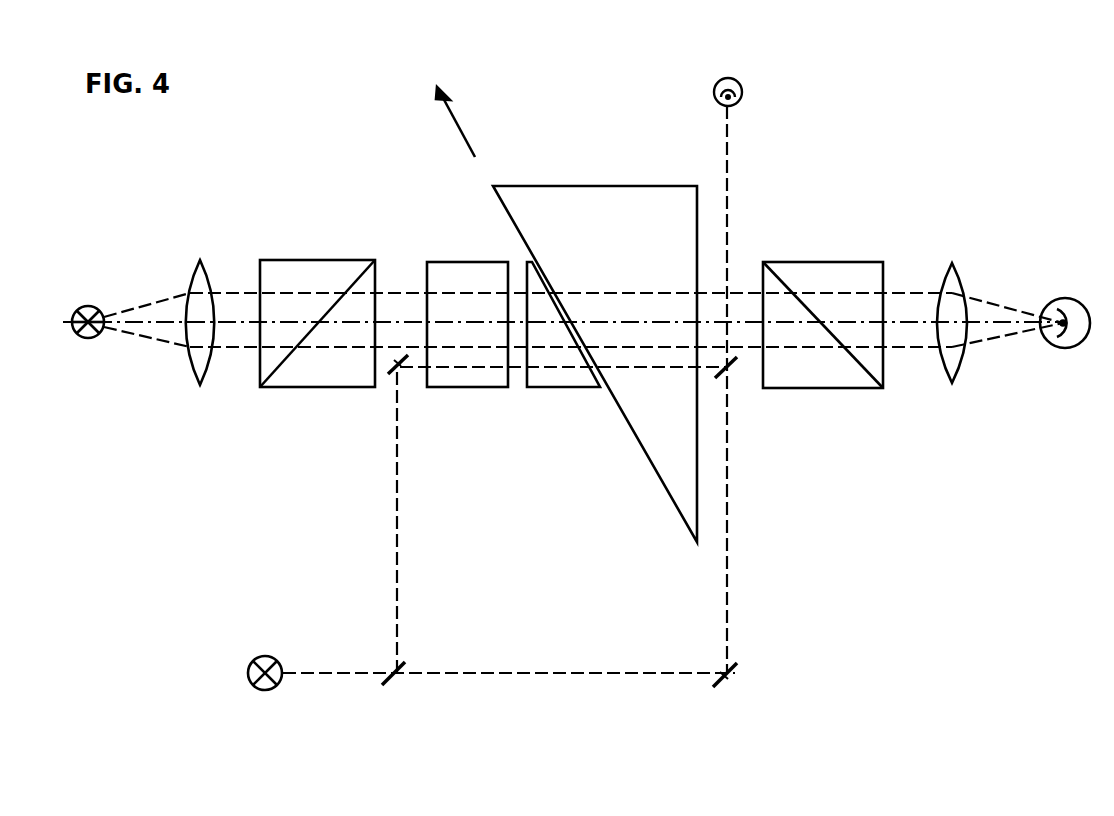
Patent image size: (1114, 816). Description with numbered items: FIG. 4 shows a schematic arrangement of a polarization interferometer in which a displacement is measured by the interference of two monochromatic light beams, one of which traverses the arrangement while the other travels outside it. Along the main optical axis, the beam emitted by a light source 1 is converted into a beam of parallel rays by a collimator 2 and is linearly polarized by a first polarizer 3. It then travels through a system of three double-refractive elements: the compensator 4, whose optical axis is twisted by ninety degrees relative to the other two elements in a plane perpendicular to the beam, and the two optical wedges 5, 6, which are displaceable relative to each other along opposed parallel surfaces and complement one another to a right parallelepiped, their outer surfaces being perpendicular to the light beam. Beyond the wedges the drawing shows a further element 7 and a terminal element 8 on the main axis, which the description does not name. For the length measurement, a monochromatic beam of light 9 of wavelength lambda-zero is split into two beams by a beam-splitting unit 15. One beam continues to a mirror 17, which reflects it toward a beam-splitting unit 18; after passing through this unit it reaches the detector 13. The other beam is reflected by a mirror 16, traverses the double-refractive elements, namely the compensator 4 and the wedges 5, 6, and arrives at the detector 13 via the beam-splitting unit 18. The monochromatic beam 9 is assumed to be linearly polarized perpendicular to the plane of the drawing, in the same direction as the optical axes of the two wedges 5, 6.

The light source 1 is at (88, 353).
The collimator 2 is at (200, 348).
The first polarizer 3 is at (317, 348).
The compensator 4 is at (467, 350).
The optical wedge 5 is at (563, 350).
The optical wedge 6 is at (595, 364).
The beam splitter 7 is at (823, 350).
The detector 8 is at (1065, 349).
The monochromatic beam of light 9 is at (265, 698).
The detector 13 is at (729, 71).
The beam-splitting unit 15 is at (392, 701).
The mirror 16 is at (398, 397).
The mirror 17 is at (721, 701).
The beam-splitting unit 18 is at (729, 398).